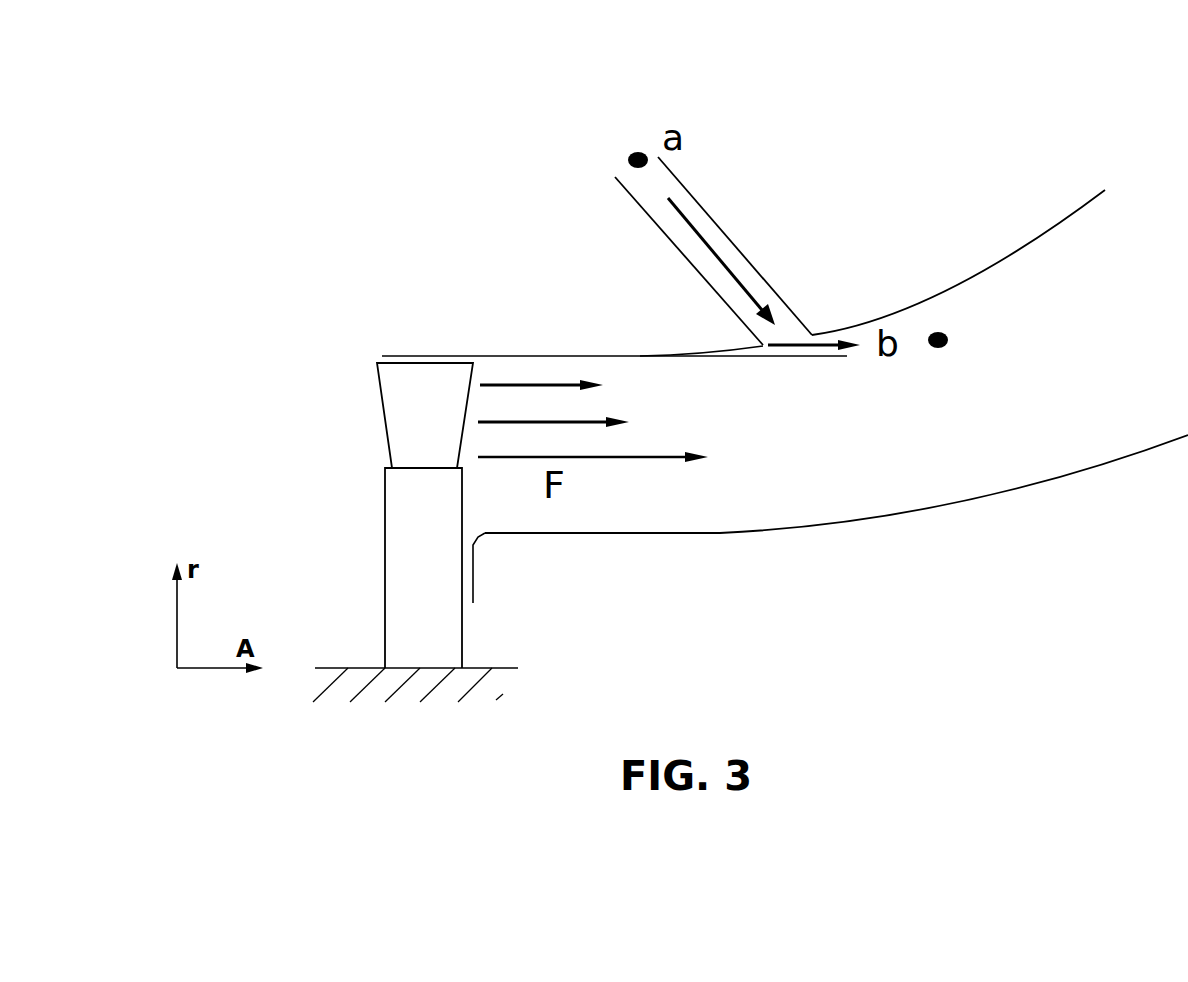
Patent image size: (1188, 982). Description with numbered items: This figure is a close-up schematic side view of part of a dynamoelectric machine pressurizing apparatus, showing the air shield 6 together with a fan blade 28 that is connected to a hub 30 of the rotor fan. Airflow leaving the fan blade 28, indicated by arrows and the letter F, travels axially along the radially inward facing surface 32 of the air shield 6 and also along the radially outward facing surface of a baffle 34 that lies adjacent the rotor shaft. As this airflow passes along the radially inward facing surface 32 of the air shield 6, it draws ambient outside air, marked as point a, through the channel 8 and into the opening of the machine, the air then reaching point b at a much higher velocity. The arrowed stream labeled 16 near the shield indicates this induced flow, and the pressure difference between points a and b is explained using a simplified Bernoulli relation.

The air shield 6 is at (504, 252).
The channel 8 is at (582, 171).
The cooling air flow 16 is at (810, 376).
The fan blade 28 is at (406, 404).
The hub 30 is at (410, 592).
The radially inward facing surface 32 is at (947, 290).
The baffle 34 is at (657, 579).